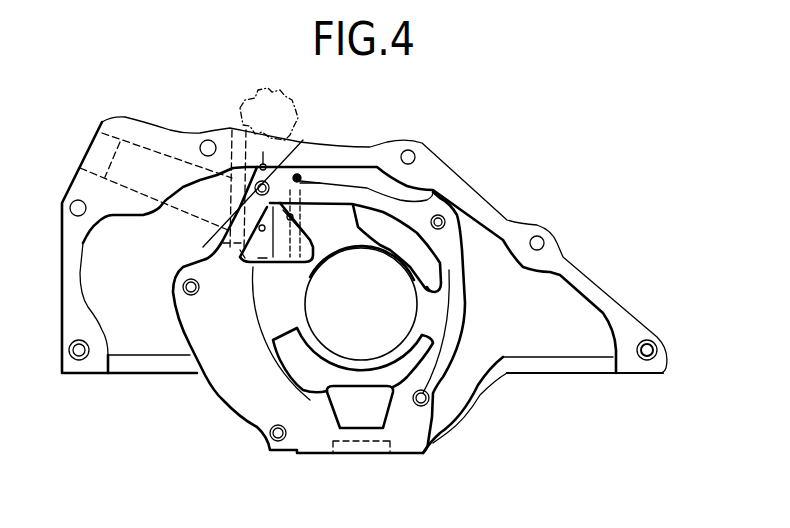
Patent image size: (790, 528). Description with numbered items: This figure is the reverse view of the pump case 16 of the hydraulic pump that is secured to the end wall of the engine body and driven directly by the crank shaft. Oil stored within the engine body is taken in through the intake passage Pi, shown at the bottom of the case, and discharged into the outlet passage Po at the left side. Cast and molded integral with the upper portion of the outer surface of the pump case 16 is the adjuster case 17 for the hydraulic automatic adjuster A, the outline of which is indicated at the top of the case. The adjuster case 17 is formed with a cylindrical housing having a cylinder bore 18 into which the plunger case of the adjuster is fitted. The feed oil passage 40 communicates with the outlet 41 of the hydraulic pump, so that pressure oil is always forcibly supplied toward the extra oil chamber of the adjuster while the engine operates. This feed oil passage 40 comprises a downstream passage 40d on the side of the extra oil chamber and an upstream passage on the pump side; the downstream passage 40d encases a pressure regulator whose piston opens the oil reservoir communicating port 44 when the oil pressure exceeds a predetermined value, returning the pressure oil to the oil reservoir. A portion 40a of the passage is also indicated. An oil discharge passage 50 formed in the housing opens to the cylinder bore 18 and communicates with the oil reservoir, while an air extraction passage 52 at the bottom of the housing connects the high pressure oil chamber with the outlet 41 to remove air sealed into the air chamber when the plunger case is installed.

The pump case 16 is at (452, 163).
The adjuster case 17 is at (238, 160).
The cylinder bore 18 is at (156, 181).
The feed oil passage 40 is at (305, 185).
The bracket arm 40a is at (303, 234).
The downstream passage 40d is at (318, 178).
The outlet 41 is at (241, 259).
The oil reservoir communicating port 44 is at (299, 176).
The oil discharge passage 50 is at (266, 166).
The air extraction passage 52 is at (259, 259).
The outlet passage Po is at (121, 201).
The intake passage Pi is at (375, 428).
The hydraulic automatic adjuster A is at (295, 108).